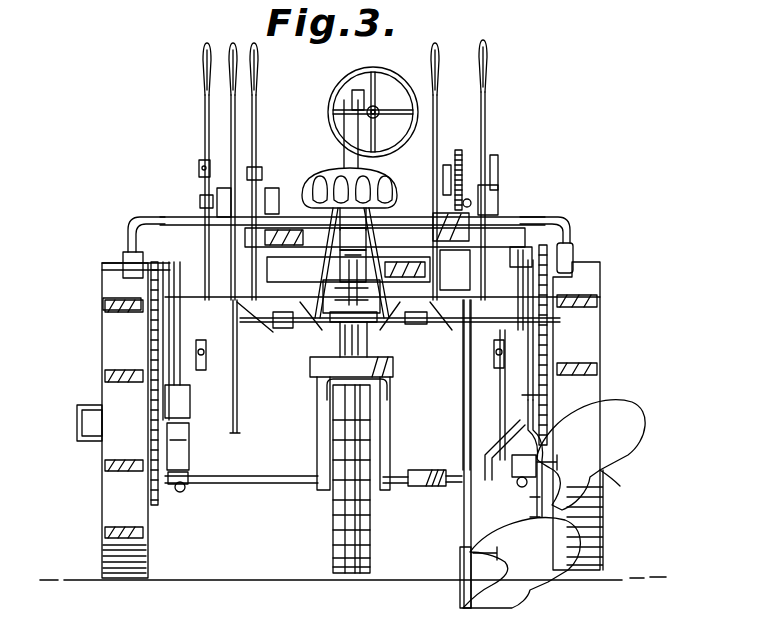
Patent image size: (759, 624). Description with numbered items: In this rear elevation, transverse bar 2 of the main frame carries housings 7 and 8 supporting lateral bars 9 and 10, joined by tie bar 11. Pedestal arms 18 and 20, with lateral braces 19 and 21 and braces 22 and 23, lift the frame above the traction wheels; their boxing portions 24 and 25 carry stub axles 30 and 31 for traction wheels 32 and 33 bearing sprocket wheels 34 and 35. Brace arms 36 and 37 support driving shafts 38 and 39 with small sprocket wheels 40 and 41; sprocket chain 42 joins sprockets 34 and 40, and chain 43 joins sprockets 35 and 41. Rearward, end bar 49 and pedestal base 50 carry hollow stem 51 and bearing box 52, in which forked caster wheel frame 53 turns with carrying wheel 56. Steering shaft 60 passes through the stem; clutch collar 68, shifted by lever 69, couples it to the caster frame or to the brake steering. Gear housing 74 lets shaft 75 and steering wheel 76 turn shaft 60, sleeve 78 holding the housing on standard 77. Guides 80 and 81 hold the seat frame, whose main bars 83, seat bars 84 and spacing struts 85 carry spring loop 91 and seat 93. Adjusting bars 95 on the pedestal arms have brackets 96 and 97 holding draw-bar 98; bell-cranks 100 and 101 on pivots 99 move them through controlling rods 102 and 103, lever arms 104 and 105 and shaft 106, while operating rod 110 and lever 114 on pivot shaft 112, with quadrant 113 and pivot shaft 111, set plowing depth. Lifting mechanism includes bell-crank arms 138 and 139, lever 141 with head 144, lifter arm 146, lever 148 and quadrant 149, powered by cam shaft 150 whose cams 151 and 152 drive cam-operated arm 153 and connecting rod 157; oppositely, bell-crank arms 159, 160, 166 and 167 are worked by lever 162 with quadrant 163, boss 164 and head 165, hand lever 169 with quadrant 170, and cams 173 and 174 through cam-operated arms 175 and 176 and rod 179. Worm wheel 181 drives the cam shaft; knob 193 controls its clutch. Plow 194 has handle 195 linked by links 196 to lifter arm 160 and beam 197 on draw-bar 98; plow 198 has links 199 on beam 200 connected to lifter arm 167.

The transverse bar 2 is at (294, 215).
The housing 7 is at (420, 322).
The housing 8 is at (282, 322).
The lateral bar 9 is at (512, 242).
The lateral bar 10 is at (223, 250).
The tie bar 11 is at (322, 315).
The pedestal arm 18 is at (552, 320).
The lateral brace 19 is at (475, 306).
The pedestal arm 20 is at (172, 316).
The lateral brace 21 is at (208, 306).
The arm brace 22 is at (548, 283).
The brace 23 is at (170, 278).
The boxing portion 24 is at (518, 455).
The boxing portion 25 is at (190, 455).
The stub axle 30 is at (545, 410).
The stub axle 31 is at (163, 440).
The traction wheel 32 is at (604, 545).
The traction wheel 33 is at (102, 550).
The sprocket wheel 34 is at (585, 365).
The sprocket wheel 35 is at (158, 468).
The brace arm 36 is at (530, 237).
The brace arm 37 is at (227, 260).
The driving shaft 38 is at (575, 248).
The driving shaft 39 is at (123, 251).
The sprocket wheel 40 is at (568, 228).
The sprocket wheel 41 is at (150, 238).
The sprocket chain 42 is at (580, 300).
The sprocket chain 43 is at (163, 312).
The transverse end bar 49 is at (395, 205).
The pedestal base 50 is at (345, 340).
The hollow stem 51 is at (320, 393).
The bearing box 52 is at (392, 372).
The forked caster wheel frame 53 is at (390, 400).
The carrying wheel 56 is at (333, 530).
The steering shaft 60 is at (344, 156).
The clutch collar 68 is at (340, 275).
The shifting and controlling lever 69 is at (305, 246).
The gear housing 74 is at (356, 96).
The shaft 75 is at (378, 109).
The steering wheel 76 is at (381, 68).
The standard 77 is at (344, 128).
The sleeve 78 is at (352, 98).
The guide 80 is at (372, 322).
The guide 81 is at (322, 350).
The main bar 83 is at (380, 345).
The seat bar 84 is at (380, 180).
The spacing struts 85 is at (385, 172).
The loop 91 is at (366, 231).
The seat 93 is at (318, 180).
The adjusting bar 95 is at (180, 492).
The bracket 96 is at (516, 487).
The bracket 97 is at (190, 488).
The draw-bar 98 is at (268, 485).
The pivot 99 is at (206, 350).
The bell-crank 100 is at (190, 400).
The bell-crank 101 is at (500, 372).
The controlling rod 102 is at (175, 320).
The controlling rod 103 is at (537, 318).
The lever arm 104 is at (102, 266).
The lever arm 105 is at (560, 290).
The shaft 106 is at (181, 323).
The operating rod 110 is at (213, 233).
The pivot shaft 111 is at (430, 314).
The pivot shaft 112 is at (268, 314).
The quadrant 113 is at (103, 300).
The lever 114 is at (231, 103).
The arm 138 is at (230, 247).
The arm 139 is at (185, 326).
The lever 141 is at (205, 120).
The head 144 is at (200, 196).
The arm 146 is at (233, 425).
The lever 148 is at (258, 99).
The quadrant 149 is at (282, 231).
The cam shaft 150 is at (262, 175).
The cam 151 is at (203, 152).
The cam 152 is at (258, 137).
The cam-operated arm 153 is at (203, 165).
The connecting rod 157 is at (199, 170).
The arm 159 is at (495, 235).
The arm 160 is at (556, 300).
The lever 162 is at (492, 112).
The quadrant 163 is at (487, 225).
The boss 164 is at (500, 200).
The head 165 is at (498, 205).
The arm 166 is at (455, 267).
The arm 167 is at (463, 365).
The hand lever 169 is at (438, 98).
The quadrant 170 is at (433, 230).
The cam 173 is at (490, 152).
The cam 174 is at (447, 165).
The cam-operated arm 175 is at (492, 170).
The cam-operated arm 176 is at (462, 160).
The rod 179 is at (500, 182).
The worm wheel 181 is at (486, 105).
The knob 193 is at (467, 199).
The plow 194 is at (625, 462).
The handle 195 is at (524, 398).
The links 196 is at (544, 415).
The beam 197 is at (468, 505).
The plow 198 is at (460, 563).
The links 199 is at (464, 480).
The beam 200 is at (432, 470).